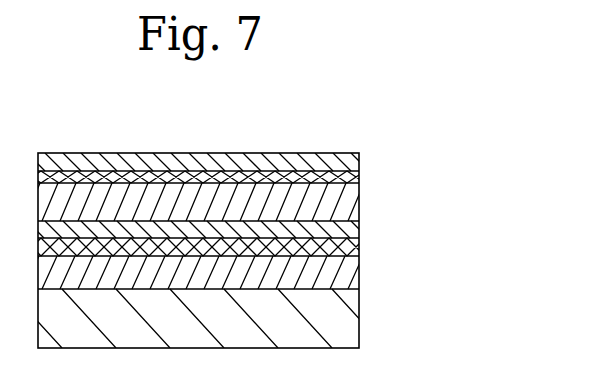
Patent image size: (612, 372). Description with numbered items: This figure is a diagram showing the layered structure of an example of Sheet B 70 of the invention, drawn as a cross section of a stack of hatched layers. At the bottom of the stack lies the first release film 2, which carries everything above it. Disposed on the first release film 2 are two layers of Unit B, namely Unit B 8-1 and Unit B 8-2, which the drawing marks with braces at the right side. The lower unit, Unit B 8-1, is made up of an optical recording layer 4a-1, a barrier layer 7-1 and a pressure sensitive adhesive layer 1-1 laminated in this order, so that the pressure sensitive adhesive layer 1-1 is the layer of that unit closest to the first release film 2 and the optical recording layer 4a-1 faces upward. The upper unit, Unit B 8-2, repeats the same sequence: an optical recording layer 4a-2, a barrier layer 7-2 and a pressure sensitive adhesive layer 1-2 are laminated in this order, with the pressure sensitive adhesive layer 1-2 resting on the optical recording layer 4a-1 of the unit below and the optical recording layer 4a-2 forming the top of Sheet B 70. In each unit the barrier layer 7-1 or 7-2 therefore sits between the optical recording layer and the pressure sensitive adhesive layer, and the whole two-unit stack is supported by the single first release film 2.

The Sheet B 70 is at (283, 125).
The first release film 2 is at (359, 316).
The Unit B 8-1 is at (466, 216).
The Unit B 8-2 is at (467, 132).
The pressure sensitive adhesive layer 1-1 is at (359, 270).
The pressure sensitive adhesive layer 1-2 is at (359, 199).
The barrier layer 7-1 is at (359, 246).
The barrier layer 7-2 is at (359, 174).
The optical recording layer 4a-1 is at (359, 222).
The optical recording layer 4a-2 is at (359, 153).